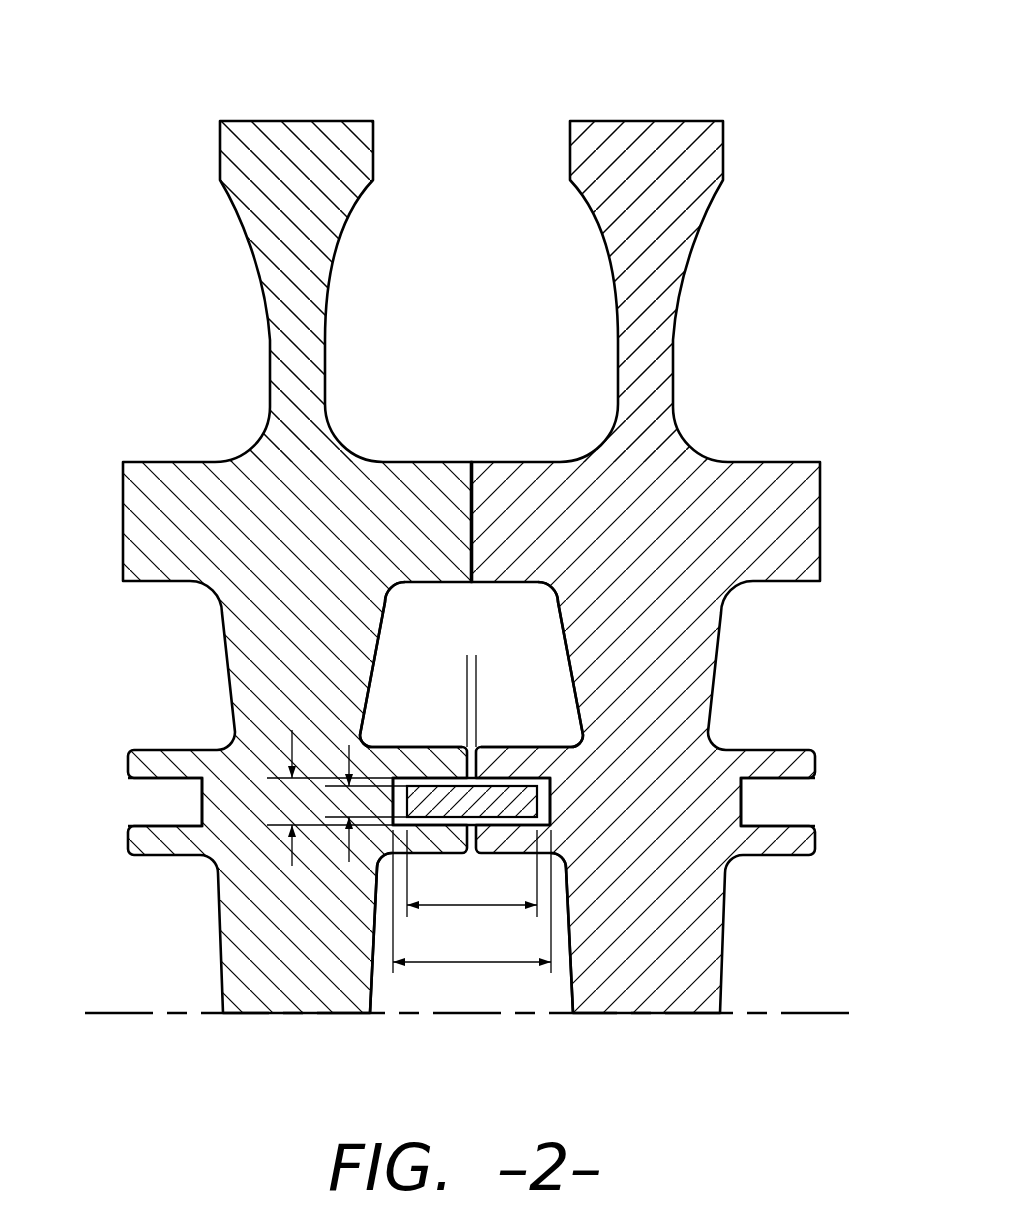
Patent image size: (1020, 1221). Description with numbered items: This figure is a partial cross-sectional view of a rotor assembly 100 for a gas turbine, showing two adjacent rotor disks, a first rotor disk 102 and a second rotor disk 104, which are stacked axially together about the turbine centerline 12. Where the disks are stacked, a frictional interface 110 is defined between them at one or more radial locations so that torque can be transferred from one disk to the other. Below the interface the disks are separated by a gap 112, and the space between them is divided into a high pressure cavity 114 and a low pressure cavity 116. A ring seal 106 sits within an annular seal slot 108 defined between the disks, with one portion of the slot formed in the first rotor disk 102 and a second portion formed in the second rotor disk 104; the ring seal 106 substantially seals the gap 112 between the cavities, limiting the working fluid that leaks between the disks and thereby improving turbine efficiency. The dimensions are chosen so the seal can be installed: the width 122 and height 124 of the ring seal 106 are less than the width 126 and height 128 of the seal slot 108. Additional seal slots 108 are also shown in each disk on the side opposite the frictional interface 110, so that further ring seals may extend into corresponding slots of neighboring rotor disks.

The turbine centerline 12 is at (762, 1016).
The rotor assembly 100 is at (182, 225).
The first rotor disk 102 is at (268, 116).
The second rotor disk 104 is at (676, 116).
The ring seal 106 is at (503, 793).
The seal slot 108 is at (437, 779).
The frictional interface 110 is at (468, 500).
The gap 112 is at (417, 672).
The high pressure cavity 114 is at (422, 1004).
The low pressure cavity 116 is at (455, 637).
The width of the ring seal 122 is at (458, 905).
The height of the ring seal 124 is at (347, 745).
The width of the seal slot 126 is at (462, 962).
The height of the seal slot 128 is at (290, 866).